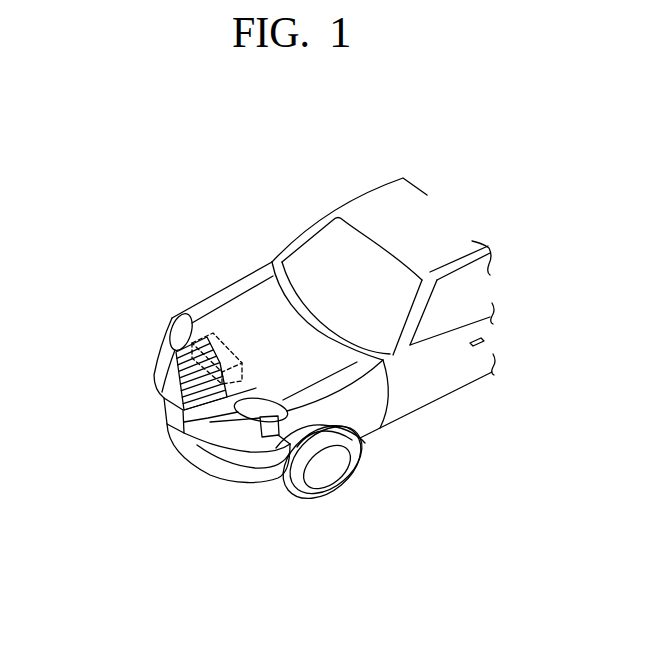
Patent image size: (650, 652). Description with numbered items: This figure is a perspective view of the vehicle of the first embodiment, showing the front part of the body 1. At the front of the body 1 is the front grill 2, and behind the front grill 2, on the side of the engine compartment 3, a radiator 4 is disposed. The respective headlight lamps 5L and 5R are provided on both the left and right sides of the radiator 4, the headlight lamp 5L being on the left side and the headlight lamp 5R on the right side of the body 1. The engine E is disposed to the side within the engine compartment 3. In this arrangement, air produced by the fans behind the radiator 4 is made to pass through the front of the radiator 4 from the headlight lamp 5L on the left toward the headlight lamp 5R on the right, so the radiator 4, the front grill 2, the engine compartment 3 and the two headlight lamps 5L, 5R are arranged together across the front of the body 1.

The body 1 is at (332, 192).
The front grill 2 is at (203, 447).
The engine compartment 3 is at (237, 316).
The radiator 4 is at (243, 398).
The headlight lamp 5L is at (263, 437).
The headlight lamp 5R is at (162, 318).
The engine E is at (193, 342).